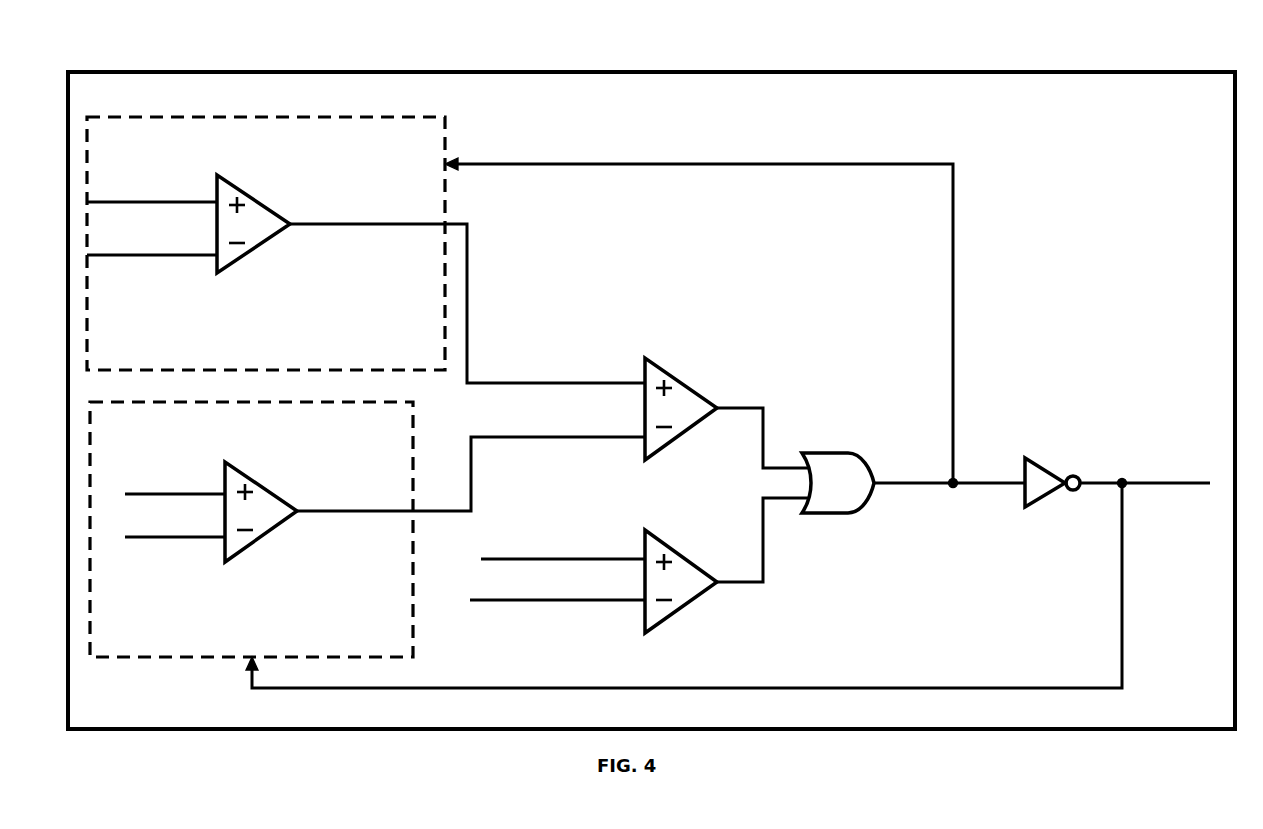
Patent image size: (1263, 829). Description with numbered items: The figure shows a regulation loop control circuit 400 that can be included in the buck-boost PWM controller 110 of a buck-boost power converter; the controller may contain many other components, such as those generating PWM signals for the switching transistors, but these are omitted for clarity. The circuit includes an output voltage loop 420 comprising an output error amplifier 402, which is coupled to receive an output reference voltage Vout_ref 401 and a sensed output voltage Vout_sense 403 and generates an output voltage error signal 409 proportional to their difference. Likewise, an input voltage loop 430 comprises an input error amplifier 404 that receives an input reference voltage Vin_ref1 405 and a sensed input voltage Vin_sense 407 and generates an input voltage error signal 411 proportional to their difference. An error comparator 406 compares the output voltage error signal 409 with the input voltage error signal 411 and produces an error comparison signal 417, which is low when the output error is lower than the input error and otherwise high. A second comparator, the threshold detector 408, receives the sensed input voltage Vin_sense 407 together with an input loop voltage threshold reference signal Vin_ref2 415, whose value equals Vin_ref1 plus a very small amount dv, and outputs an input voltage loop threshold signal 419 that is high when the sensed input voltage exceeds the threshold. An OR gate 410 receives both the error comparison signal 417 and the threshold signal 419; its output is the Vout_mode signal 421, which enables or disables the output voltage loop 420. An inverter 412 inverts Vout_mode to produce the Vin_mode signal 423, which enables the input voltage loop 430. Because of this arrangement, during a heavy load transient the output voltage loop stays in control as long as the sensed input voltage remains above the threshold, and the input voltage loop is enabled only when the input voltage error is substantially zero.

The buck-boost control diagram 400 is at (694, 60).
The controller 110 is at (770, 101).
The output reference voltage Vout_ref 401 is at (143, 176).
The output error amplifier 402 is at (262, 199).
The sensed output voltage Vout_sense 403 is at (160, 290).
The output voltage error signal 409 is at (339, 200).
The output voltage loop 420 is at (388, 351).
The input reference voltage Vin_ref1 405 is at (177, 470).
The input error amplifier 404 is at (265, 486).
The sensed input voltage Vin_sense 407 is at (167, 570).
The input voltage error signal 411 is at (352, 481).
The input voltage loop 430 is at (358, 641).
The error comparator 406 is at (688, 382).
The error comparison signal 417 is at (740, 407).
The threshold detector 408 is at (687, 554).
The input voltage loop threshold signal 419 is at (738, 583).
The input loop voltage threshold reference signal Vin_ref2 415 is at (566, 629).
The OR gate 410 is at (837, 451).
The Vout_mode signal 421 is at (953, 515).
The inverter 412 is at (1048, 466).
The Vin_mode signal 423 is at (1148, 456).